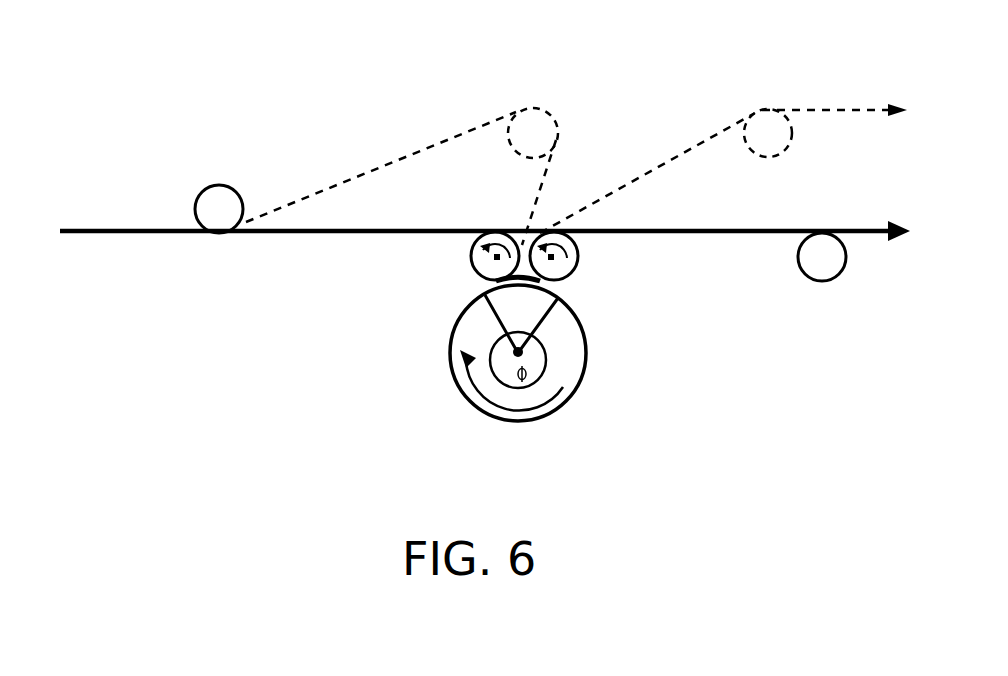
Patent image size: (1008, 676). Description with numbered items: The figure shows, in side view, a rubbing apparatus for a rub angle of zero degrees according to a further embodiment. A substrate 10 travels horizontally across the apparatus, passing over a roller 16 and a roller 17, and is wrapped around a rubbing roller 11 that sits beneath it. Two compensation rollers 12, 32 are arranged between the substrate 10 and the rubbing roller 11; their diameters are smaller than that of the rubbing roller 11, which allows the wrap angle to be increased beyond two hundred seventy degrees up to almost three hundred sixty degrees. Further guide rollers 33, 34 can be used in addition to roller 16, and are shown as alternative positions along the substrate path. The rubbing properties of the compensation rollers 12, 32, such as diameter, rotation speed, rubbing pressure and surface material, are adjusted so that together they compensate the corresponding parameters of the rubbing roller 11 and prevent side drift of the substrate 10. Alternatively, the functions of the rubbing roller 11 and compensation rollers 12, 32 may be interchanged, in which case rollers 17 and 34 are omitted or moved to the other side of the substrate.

The substrate 10 is at (485, 152).
The rubbing roller 11 is at (538, 379).
The compensation roller 12 is at (448, 170).
The roller 16 is at (210, 148).
The roller 17 is at (844, 356).
The compensation roller 32 is at (640, 358).
The guide roller 33 is at (441, 153).
The guide roller 34 is at (723, 147).